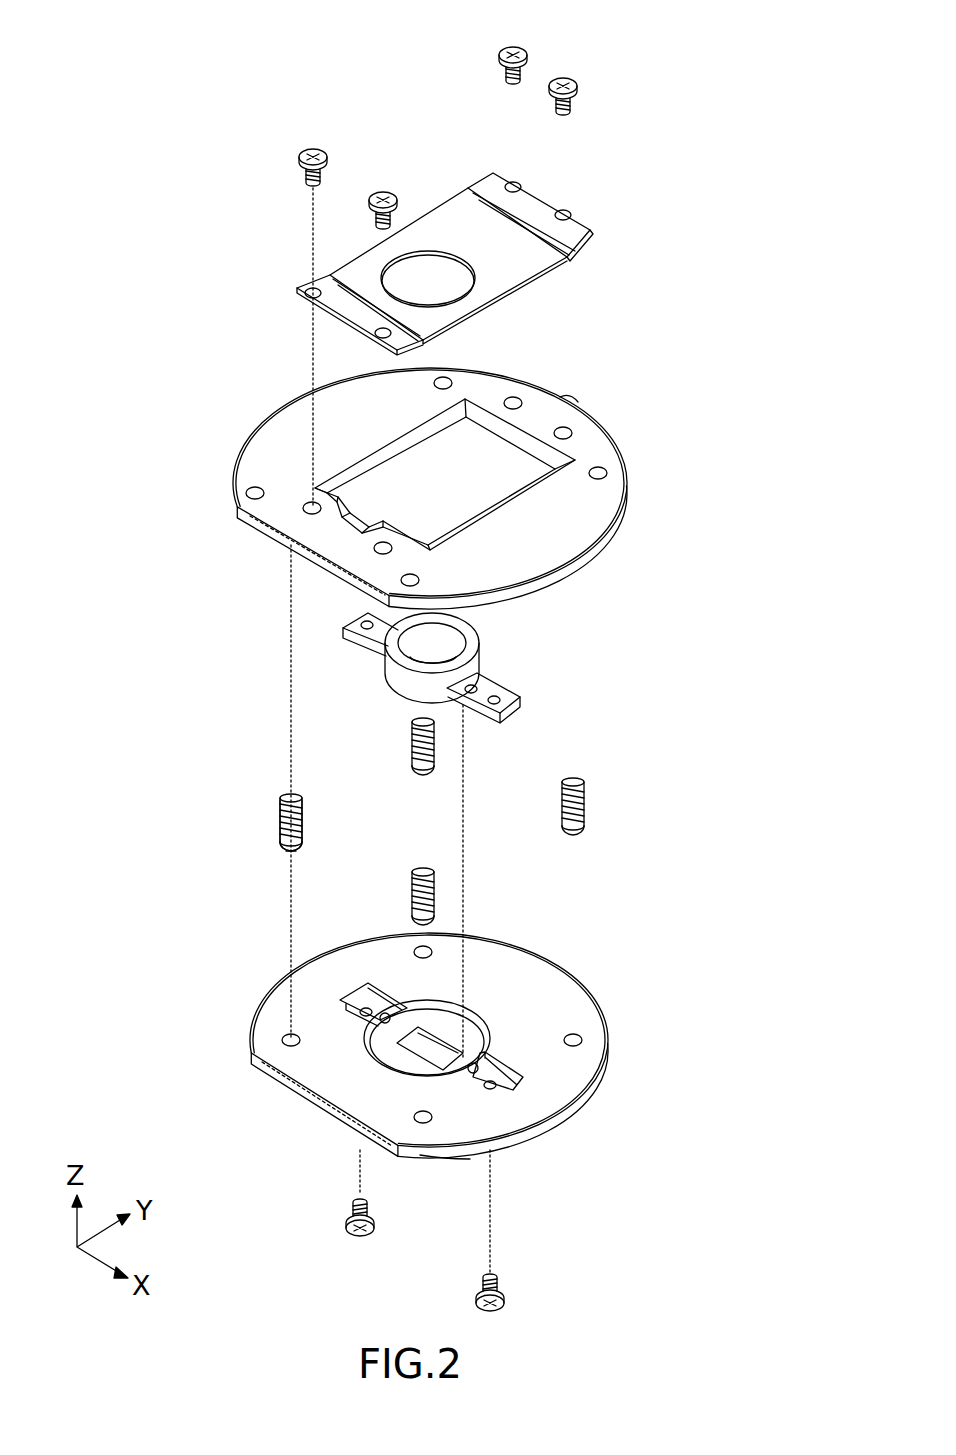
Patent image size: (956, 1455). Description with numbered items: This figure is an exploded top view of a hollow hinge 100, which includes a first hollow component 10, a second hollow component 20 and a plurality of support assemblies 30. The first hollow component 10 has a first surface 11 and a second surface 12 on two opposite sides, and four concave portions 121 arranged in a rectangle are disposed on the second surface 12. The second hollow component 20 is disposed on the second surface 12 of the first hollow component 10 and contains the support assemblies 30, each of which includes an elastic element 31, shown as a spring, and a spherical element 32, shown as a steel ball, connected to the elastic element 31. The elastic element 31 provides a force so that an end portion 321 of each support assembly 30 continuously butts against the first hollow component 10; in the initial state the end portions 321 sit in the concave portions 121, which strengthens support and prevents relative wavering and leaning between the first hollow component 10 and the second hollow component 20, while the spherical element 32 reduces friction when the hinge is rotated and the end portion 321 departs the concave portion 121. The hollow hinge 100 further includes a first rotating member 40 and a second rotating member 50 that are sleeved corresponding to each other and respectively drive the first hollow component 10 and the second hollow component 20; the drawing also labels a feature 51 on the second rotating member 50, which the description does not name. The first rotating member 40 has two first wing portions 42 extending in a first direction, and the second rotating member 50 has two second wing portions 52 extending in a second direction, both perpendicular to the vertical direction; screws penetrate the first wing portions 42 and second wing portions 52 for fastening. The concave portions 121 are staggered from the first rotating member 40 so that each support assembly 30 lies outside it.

The hollow hinge 100 is at (183, 66).
The first hollow component 10 is at (433, 1051).
The first surface 11 is at (527, 1160).
The second surface 12 is at (511, 942).
The concave portion 121 is at (282, 1040).
The second hollow component 20 is at (594, 517).
The support assembly 30 is at (250, 803).
The elastic element 31 is at (280, 812).
The spherical element 32 is at (282, 848).
The end portion 321 is at (272, 861).
The first rotating member 40 is at (447, 668).
The first wing portion 42 is at (365, 636).
The second rotating member 50 is at (443, 259).
The opening 51 is at (428, 266).
The second wing portion 52 is at (590, 228).